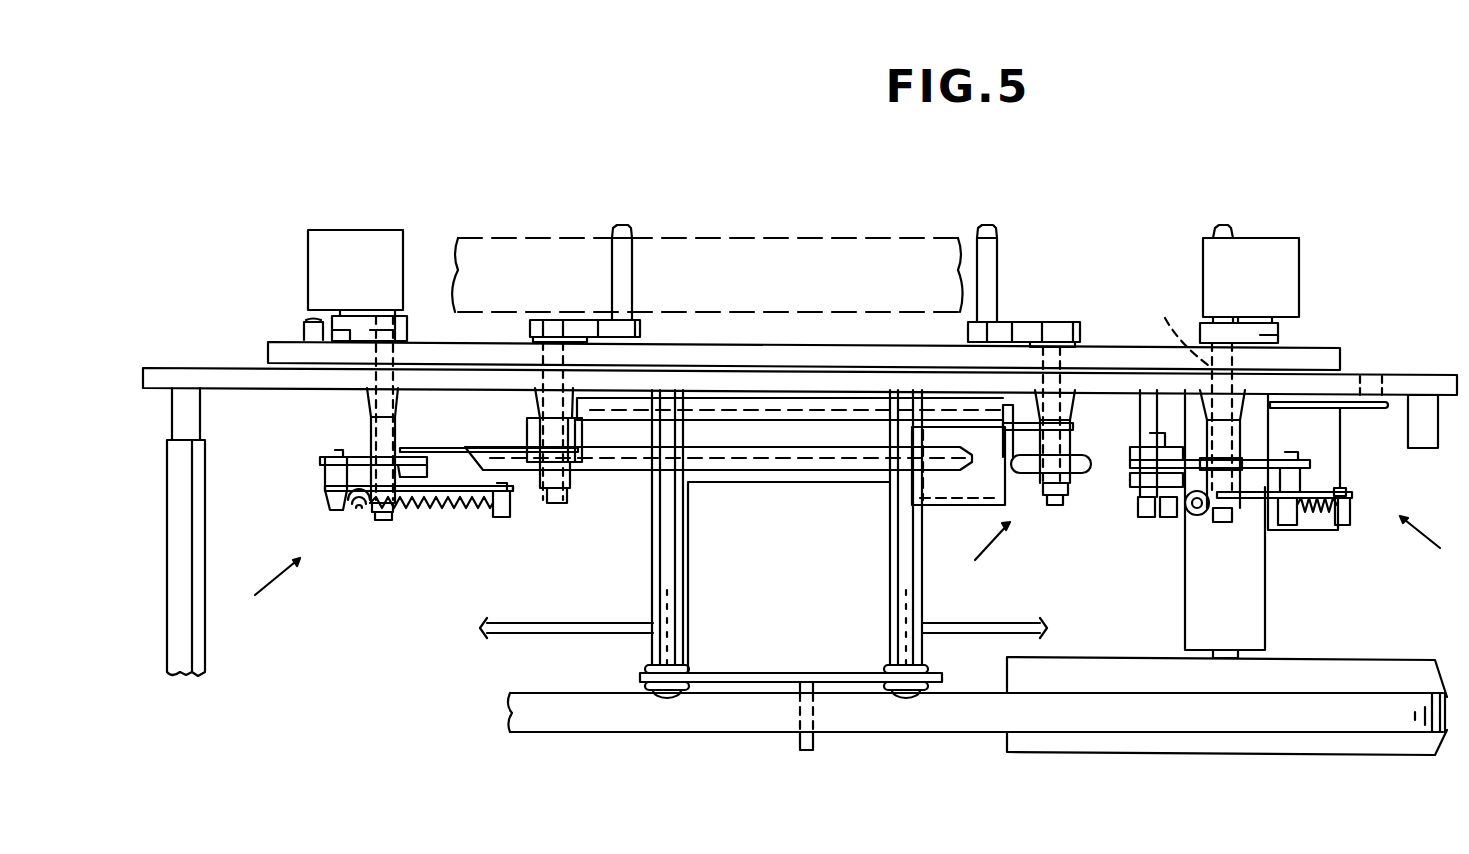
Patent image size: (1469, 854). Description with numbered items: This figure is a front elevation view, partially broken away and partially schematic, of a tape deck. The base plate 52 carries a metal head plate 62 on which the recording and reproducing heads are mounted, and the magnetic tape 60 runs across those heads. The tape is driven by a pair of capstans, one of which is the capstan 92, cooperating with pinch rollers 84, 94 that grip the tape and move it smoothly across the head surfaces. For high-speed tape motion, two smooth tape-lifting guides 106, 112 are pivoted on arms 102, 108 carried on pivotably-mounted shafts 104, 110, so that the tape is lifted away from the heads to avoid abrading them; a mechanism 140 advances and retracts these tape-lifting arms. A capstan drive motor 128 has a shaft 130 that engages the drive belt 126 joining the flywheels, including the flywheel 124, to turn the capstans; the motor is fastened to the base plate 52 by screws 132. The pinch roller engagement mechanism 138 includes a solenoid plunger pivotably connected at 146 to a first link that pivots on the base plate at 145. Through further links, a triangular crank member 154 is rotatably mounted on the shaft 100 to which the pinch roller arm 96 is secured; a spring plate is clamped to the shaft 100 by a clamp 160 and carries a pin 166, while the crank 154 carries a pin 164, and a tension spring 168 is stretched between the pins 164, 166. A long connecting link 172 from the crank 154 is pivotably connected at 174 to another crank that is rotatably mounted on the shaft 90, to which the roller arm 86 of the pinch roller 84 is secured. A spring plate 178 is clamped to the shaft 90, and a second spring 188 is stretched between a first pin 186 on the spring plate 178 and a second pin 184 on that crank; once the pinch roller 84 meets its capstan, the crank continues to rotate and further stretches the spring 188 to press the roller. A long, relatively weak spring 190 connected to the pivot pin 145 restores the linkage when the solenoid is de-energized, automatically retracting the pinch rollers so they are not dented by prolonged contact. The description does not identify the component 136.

The base plate 52 is at (196, 375).
The magnetic tape 60 is at (769, 238).
The head plate 62 is at (270, 355).
The pinch roller 84 is at (376, 232).
The roller arm 86 is at (406, 326).
The shaft 90 is at (384, 522).
The capstan 92 is at (1213, 228).
The pinch roller 94 is at (1270, 238).
The pinch roller arm 96 is at (1280, 335).
The shaft 100 is at (1212, 368).
The arm 102 is at (530, 330).
The pivotably-mounted shaft 104 is at (565, 490).
The tape-lifting guide 106 is at (630, 226).
The arm 108 is at (1084, 322).
The pivotably-mounted shaft 110 is at (1056, 507).
The tape-lifting guide 112 is at (998, 240).
The flywheel 124 is at (1173, 752).
The drive belt 126 is at (548, 692).
The capstan drive motor 128 is at (783, 606).
The shaft 130 is at (800, 745).
The screws 132 is at (910, 700).
The support post 136 is at (1267, 620).
The pinch roller engagement mechanism 138 is at (841, 570).
The mechanism 140 is at (962, 495).
The pivot point 145 is at (1134, 512).
The pivot connection 146 is at (1170, 520).
The triangular crank member 154 is at (1274, 460).
The clamp 160 is at (1195, 517).
The pin 164 is at (1290, 528).
The pin 166 is at (1348, 512).
The tension spring 168 is at (1320, 520).
The connecting link 172 is at (642, 470).
The pivot connection 174 is at (420, 447).
The spring plate 178 is at (506, 494).
The second pin 184 is at (328, 470).
The first pin 186 is at (502, 519).
The second spring 188 is at (460, 512).
The spring 190 is at (1154, 520).